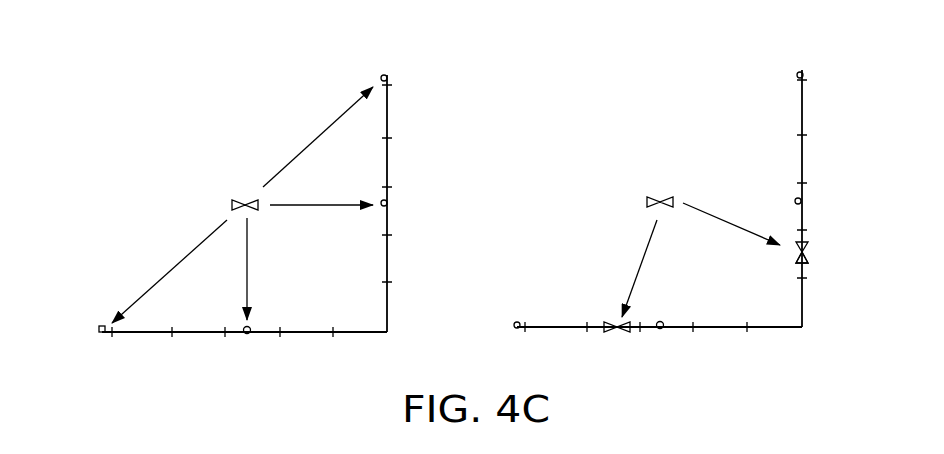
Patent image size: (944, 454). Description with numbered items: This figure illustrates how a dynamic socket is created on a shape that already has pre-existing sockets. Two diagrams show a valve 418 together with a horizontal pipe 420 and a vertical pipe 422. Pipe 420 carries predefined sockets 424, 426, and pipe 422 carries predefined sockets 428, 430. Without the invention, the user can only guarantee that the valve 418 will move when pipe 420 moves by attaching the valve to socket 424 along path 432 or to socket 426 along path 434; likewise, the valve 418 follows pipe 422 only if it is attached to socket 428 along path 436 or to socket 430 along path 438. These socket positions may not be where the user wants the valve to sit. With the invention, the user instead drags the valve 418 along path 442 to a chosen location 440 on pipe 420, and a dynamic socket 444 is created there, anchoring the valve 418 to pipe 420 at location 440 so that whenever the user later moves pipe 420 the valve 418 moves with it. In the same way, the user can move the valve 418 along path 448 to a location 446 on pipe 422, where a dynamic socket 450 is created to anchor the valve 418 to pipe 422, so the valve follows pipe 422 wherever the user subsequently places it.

The valve 418 is at (232, 205).
The pipe 420 is at (178, 333).
The pipe 422 is at (389, 125).
The predefined socket 424 is at (102, 326).
The predefined socket 426 is at (250, 333).
The predefined socket 428 is at (388, 203).
The predefined socket 430 is at (387, 76).
The path 432 is at (170, 265).
The path 434 is at (250, 272).
The path 436 is at (297, 205).
The path 438 is at (308, 140).
The location 440 is at (627, 338).
The path 442 is at (638, 280).
The dynamic socket 444 is at (612, 322).
The location 446 is at (812, 248).
The path 448 is at (710, 215).
The dynamic socket 450 is at (796, 253).